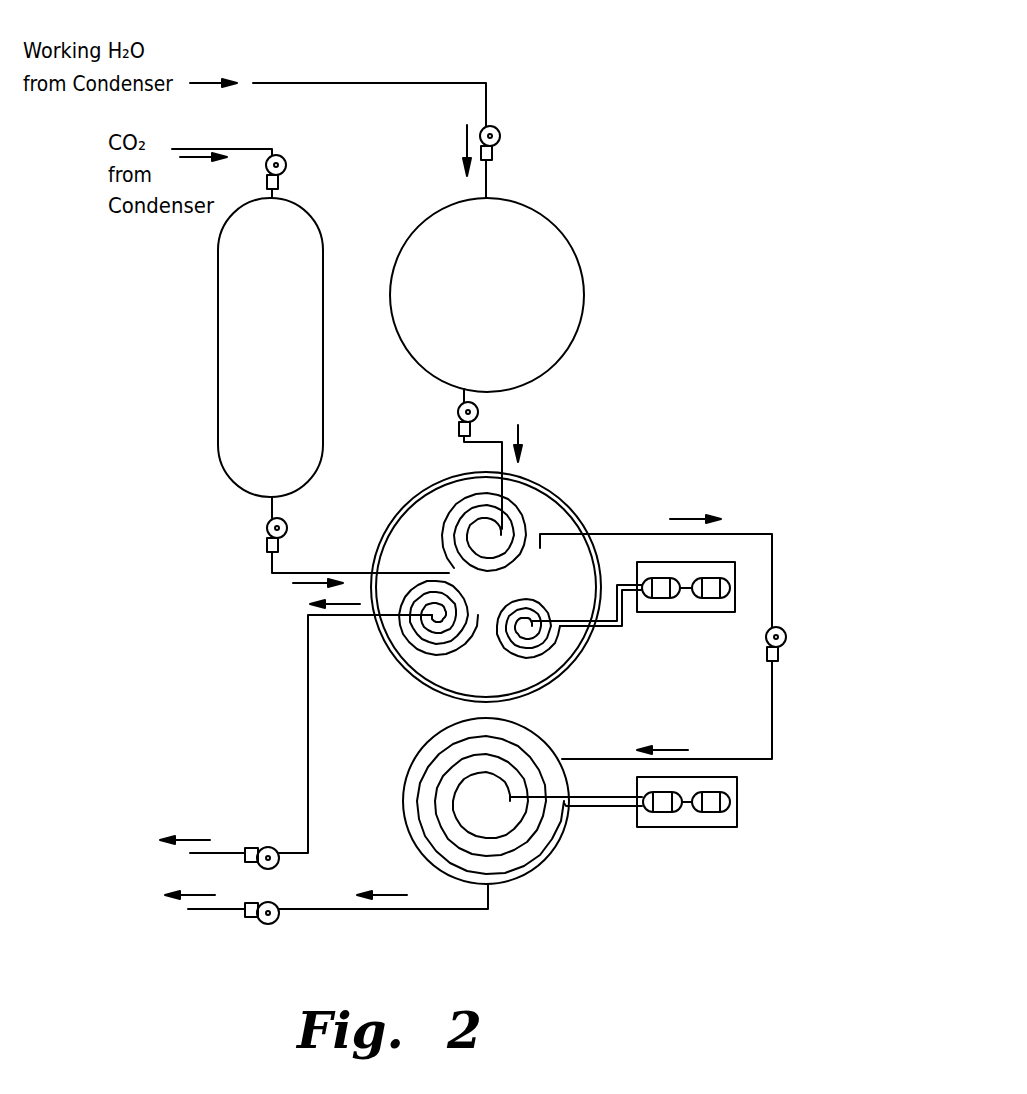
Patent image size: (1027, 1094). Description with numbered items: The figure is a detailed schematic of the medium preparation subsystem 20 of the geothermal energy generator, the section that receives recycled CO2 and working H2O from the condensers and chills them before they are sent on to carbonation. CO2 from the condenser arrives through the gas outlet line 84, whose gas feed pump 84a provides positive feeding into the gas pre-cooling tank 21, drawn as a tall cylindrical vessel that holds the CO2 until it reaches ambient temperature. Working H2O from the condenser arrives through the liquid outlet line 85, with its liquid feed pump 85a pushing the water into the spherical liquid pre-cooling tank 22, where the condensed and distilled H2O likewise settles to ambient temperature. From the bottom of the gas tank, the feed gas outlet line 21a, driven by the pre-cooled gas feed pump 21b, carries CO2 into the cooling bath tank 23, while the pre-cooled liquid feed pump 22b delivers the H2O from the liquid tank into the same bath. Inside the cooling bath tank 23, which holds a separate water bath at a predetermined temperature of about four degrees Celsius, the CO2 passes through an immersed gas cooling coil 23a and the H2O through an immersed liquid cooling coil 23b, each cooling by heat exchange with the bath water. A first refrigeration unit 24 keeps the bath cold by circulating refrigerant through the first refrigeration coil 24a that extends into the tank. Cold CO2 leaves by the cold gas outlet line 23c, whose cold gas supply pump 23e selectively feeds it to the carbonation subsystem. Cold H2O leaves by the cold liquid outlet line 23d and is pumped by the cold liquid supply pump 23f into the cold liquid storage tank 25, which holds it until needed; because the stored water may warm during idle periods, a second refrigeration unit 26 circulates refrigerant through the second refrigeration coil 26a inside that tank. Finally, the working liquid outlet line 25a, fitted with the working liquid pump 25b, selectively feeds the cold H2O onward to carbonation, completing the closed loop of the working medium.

The medium preparation subsystem 20 is at (714, 102).
The gas pre-cooling tank 21 is at (218, 330).
The feed gas outlet line 21a is at (265, 568).
The pre-cooled gas feed pump 21b is at (266, 528).
The liquid pre-cooling tank 22 is at (570, 240).
The pre-cooled liquid feed pump 22b is at (455, 413).
The cooling bath tank 23 is at (558, 490).
The gas cooling coil 23a is at (417, 657).
The liquid cooling coil 23b is at (442, 498).
The cold gas outlet line 23c is at (307, 700).
The cold liquid outlet line 23d is at (752, 534).
The cold gas supply pump 23e is at (271, 847).
The cold liquid supply pump 23f is at (788, 632).
The first refrigeration unit 24 is at (690, 613).
The first refrigeration coil 24a is at (560, 655).
The cold liquid storage tank 25 is at (562, 855).
The working liquid outlet line 25a is at (388, 912).
The working liquid pump 25b is at (263, 925).
The second refrigeration unit 26 is at (739, 790).
The second refrigeration coil 26a is at (512, 878).
The gas outlet line 84 is at (237, 149).
The gas feed pump 84a is at (287, 165).
The liquid outlet line 85 is at (387, 83).
The liquid feed pump 85a is at (500, 136).